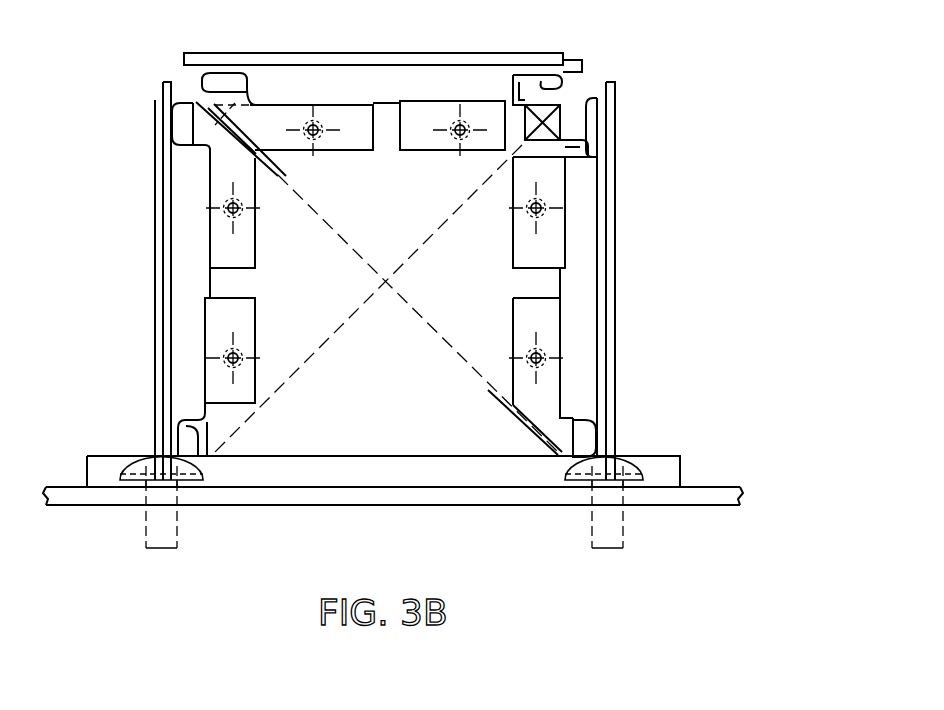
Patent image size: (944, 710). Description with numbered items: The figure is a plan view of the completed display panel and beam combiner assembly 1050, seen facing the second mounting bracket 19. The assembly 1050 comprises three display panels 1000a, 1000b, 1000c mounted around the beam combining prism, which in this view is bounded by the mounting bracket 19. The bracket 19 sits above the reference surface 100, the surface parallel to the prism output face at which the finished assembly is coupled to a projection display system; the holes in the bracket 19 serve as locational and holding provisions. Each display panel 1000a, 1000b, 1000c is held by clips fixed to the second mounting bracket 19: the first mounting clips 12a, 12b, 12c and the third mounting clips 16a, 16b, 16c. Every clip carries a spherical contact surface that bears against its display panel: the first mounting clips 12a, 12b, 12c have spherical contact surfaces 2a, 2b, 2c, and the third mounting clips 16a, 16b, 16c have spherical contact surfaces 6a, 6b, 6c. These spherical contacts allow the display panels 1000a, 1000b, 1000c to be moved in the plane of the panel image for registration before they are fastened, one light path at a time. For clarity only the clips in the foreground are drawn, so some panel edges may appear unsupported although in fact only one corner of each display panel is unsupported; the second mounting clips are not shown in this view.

The completed assembly 1050 is at (672, 99).
The display panel 1000a is at (341, 53).
The display panel 1000b is at (155, 232).
The display panel 1000c is at (613, 310).
The spherical contact surface 2a is at (223, 72).
The spherical contact surface 2b is at (190, 147).
The spherical contact surface 2c is at (596, 440).
The first mounting clip 12a is at (203, 79).
The first mounting clip 12b is at (171, 123).
The first mounting clip 12c is at (580, 420).
The spherical contact surface 6a is at (537, 72).
The spherical contact surface 6b is at (176, 440).
The spherical contact surface 6c is at (593, 121).
The third mounting clip 16a is at (563, 90).
The third mounting clip 16b is at (187, 412).
The third mounting clip 16c is at (583, 160).
The second mounting bracket 19 is at (413, 474).
The reference surface 100 is at (713, 497).